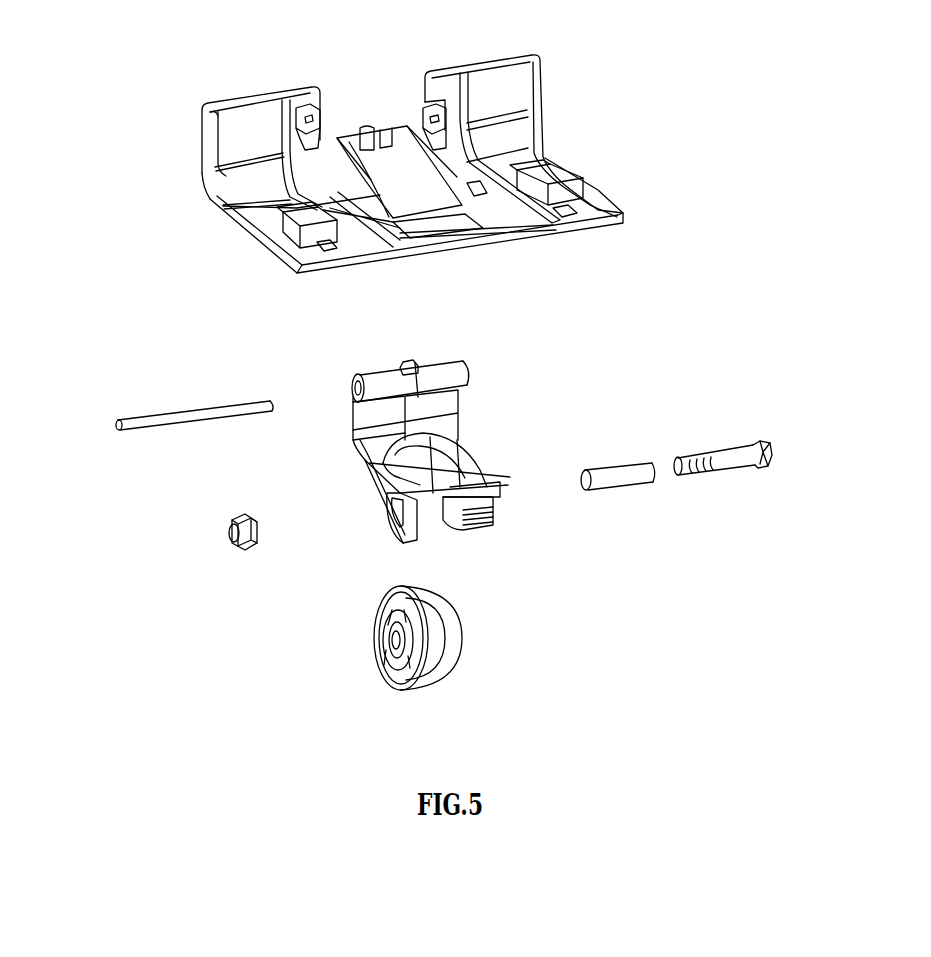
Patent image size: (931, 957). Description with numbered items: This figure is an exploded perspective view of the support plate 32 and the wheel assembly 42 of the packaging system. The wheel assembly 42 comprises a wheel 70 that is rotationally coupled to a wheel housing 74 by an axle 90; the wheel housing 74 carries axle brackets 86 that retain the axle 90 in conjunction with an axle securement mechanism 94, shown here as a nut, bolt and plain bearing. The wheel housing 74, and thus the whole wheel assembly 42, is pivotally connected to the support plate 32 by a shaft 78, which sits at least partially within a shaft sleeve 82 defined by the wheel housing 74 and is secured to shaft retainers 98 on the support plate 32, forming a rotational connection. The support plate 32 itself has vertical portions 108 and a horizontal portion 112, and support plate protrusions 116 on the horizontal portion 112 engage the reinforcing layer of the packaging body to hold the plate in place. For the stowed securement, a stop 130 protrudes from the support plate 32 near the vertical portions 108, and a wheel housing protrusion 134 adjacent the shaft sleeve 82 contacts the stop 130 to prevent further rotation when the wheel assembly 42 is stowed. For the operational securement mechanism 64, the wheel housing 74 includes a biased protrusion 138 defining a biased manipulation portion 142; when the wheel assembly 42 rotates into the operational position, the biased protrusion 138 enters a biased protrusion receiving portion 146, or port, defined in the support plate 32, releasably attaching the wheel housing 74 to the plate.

The support plate 32 is at (568, 113).
The horizontal portion 112 is at (597, 217).
The vertical portion 108 is at (214, 133).
The shaft retainer 98 is at (318, 127).
The stop 130 is at (368, 130).
The biased protrusion receiving portion 146 is at (435, 227).
The support plate protrusion 116 is at (302, 259).
The operational securement mechanism 64 is at (524, 533).
The shaft sleeve 82 is at (453, 377).
The wheel housing protrusion 134 is at (408, 363).
The wheel housing 74 is at (493, 470).
The axle bracket 86 is at (382, 523).
The biased manipulation portion 142 is at (490, 513).
The biased protrusion 138 is at (490, 530).
The wheel 70 is at (447, 657).
The shaft 78 is at (192, 412).
The axle 90 is at (623, 475).
The axle securement mechanism 94 is at (730, 462).
The wheel assembly 42 is at (148, 550).